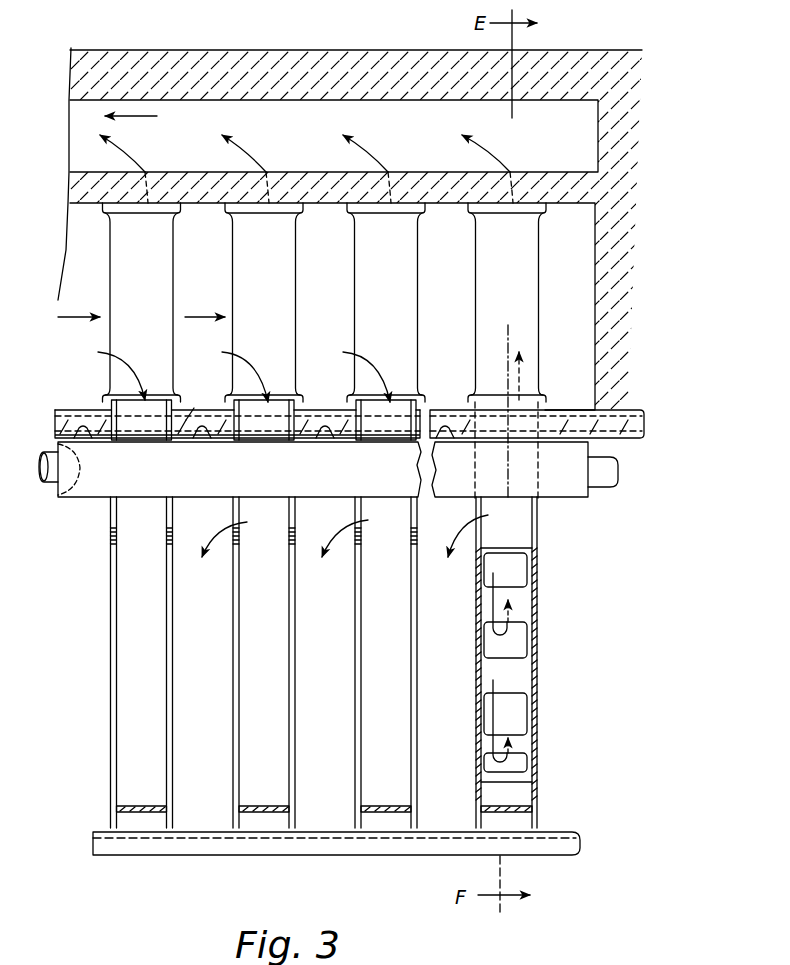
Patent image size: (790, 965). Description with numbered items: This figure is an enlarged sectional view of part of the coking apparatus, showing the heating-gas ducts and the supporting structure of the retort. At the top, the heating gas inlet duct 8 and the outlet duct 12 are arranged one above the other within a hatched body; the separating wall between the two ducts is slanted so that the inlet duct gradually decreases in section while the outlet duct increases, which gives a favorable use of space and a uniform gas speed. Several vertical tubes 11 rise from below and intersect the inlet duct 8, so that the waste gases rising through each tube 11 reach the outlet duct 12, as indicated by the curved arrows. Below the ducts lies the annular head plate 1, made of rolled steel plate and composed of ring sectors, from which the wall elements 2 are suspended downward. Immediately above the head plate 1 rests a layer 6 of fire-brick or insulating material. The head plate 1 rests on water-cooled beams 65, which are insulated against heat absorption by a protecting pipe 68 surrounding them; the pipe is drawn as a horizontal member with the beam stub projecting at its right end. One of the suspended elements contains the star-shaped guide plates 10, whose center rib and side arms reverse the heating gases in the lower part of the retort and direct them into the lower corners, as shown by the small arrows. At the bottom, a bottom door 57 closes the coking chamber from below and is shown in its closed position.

The head plate 1 is at (62, 421).
The wall elements 2 is at (355, 666).
The layer of fire-brick or insulating material 6 is at (189, 415).
The inlet duct 8 is at (582, 302).
The guide plates 10 is at (517, 672).
The tube 11 is at (290, 308).
The outlet duct 12 is at (585, 143).
The bottom doors 57 is at (345, 852).
The water-cooled beams 65 is at (608, 485).
The protecting pipe 68 is at (100, 490).